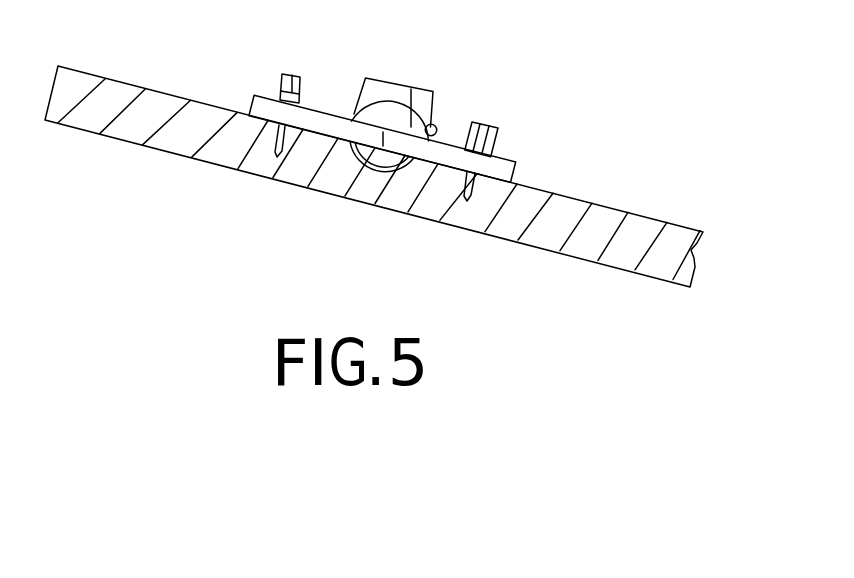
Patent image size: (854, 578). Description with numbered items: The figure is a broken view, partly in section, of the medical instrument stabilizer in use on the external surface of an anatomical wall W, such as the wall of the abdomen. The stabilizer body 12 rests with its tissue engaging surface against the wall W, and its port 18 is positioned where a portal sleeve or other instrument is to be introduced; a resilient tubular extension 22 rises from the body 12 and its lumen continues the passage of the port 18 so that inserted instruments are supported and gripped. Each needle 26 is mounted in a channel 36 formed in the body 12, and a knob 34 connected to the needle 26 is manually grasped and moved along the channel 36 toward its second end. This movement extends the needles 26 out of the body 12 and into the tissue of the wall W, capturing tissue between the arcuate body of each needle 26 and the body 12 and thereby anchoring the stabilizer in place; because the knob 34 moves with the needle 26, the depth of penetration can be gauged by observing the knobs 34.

The anatomical wall W is at (105, 80).
The body 12 is at (515, 160).
The port 18 is at (408, 77).
The tubular extension 22 is at (365, 84).
The needle 26 is at (276, 176).
The knob 34 is at (282, 75).
The channel 36 is at (485, 118).